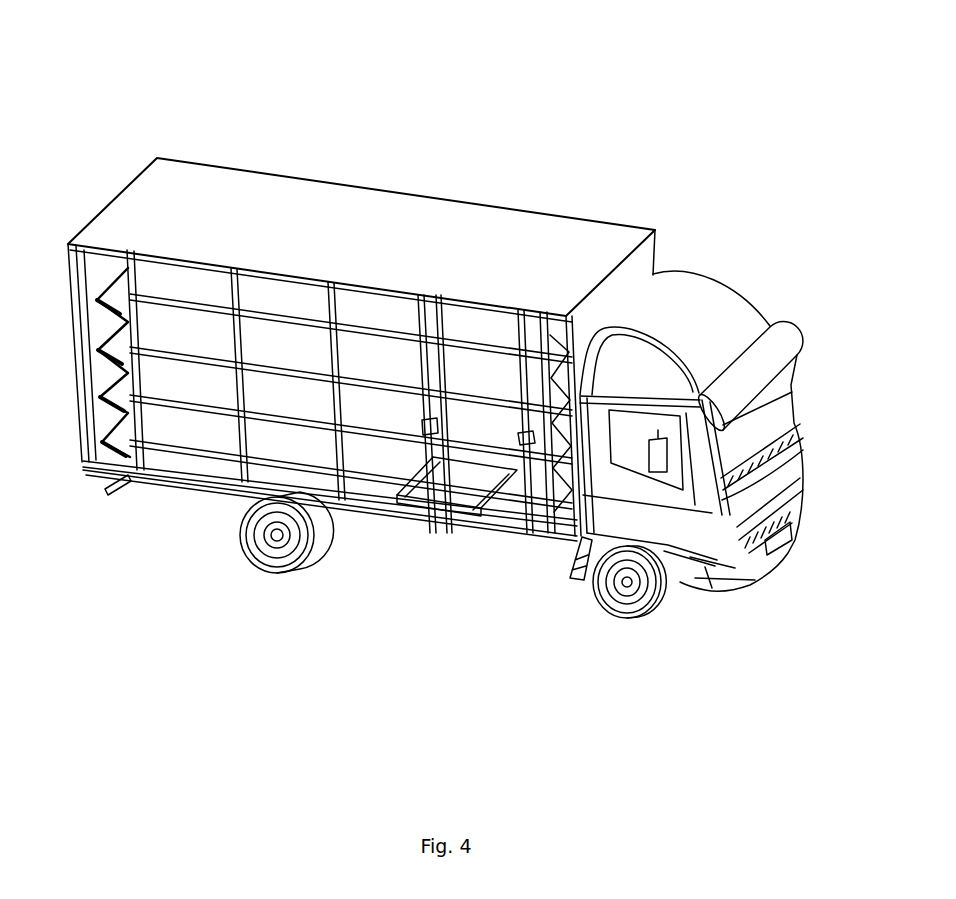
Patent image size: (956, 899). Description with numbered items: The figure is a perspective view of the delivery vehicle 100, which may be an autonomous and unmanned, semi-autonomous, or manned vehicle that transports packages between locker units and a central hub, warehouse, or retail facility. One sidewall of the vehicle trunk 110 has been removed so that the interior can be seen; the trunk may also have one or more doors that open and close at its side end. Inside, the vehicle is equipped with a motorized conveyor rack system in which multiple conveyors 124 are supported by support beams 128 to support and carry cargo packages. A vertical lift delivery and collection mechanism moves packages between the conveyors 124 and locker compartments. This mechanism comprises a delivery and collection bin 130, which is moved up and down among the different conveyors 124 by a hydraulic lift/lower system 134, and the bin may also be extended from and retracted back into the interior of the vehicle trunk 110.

The delivery vehicle 100 is at (435, 315).
The vehicle trunk 110 is at (361, 342).
The conveyors 124 is at (380, 337).
The support beams 128 is at (332, 300).
The delivery and collection bin 130 is at (455, 473).
The hydraulic lift/lower system 134 is at (530, 472).